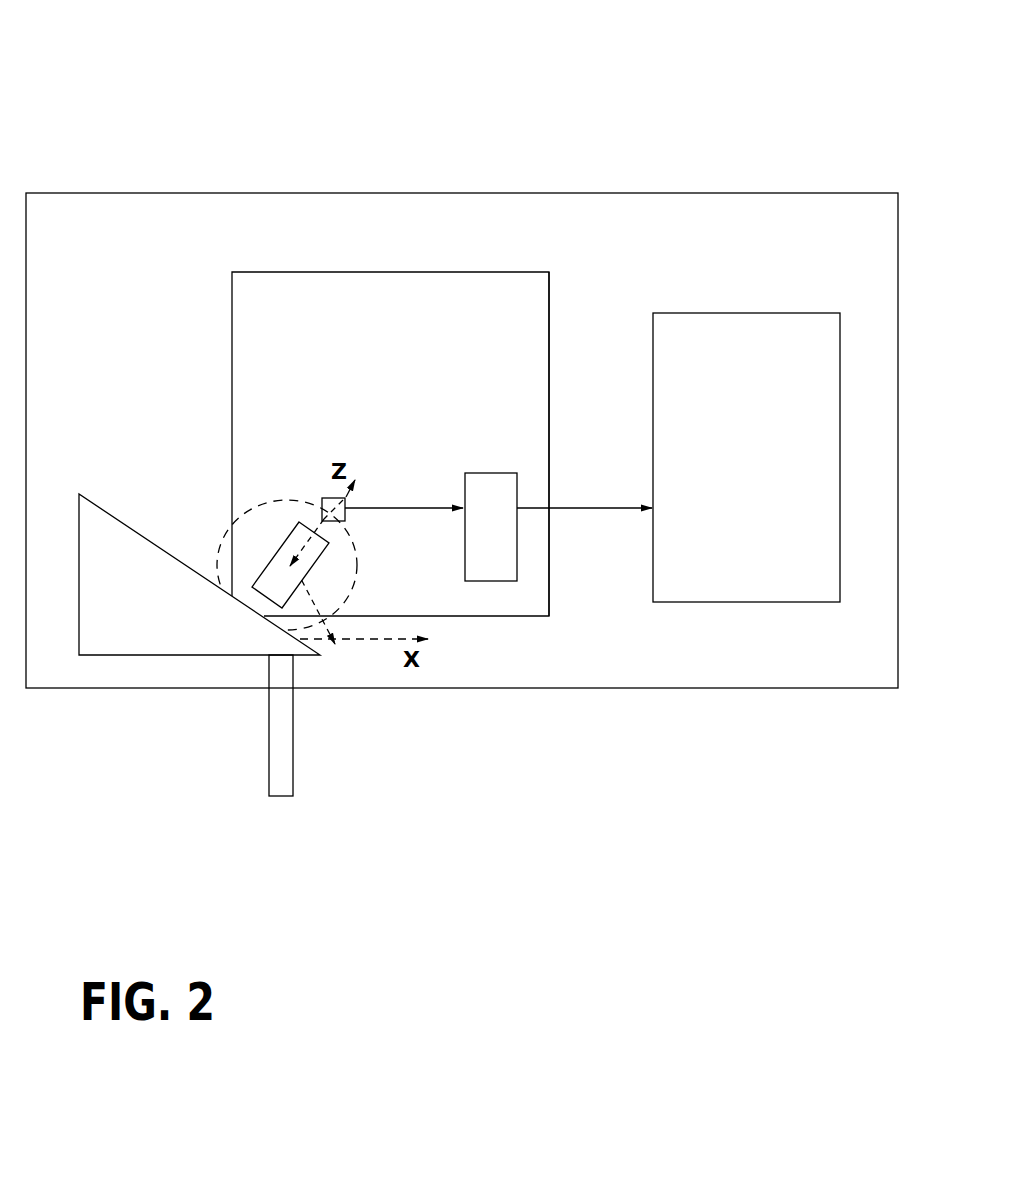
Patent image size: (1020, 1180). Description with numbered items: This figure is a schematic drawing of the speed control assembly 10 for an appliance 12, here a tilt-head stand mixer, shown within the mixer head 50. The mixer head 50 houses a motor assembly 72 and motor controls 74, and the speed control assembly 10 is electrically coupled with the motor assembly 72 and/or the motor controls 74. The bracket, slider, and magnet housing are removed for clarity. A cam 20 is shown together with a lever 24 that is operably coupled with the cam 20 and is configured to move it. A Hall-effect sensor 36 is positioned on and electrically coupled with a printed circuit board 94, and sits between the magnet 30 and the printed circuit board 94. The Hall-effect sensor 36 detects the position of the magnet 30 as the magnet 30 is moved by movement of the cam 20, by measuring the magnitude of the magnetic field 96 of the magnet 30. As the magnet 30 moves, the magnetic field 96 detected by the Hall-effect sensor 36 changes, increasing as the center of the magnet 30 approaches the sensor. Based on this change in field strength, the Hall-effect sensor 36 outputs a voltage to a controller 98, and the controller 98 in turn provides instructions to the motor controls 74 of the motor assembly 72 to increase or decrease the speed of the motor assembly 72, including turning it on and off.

The appliance 12 is at (652, 70).
The mixer head 50 is at (360, 192).
The printed circuit board 94 is at (453, 272).
The motor controls 74 is at (555, 281).
The motor assembly 72 is at (759, 464).
The controller 98 is at (495, 557).
The Hall-effect sensor 36 is at (350, 523).
The magnet 30 is at (303, 567).
The magnetic field 96 is at (325, 628).
The cam 20 is at (142, 612).
The lever 24 is at (270, 753).
The speed control assembly 10 is at (178, 703).